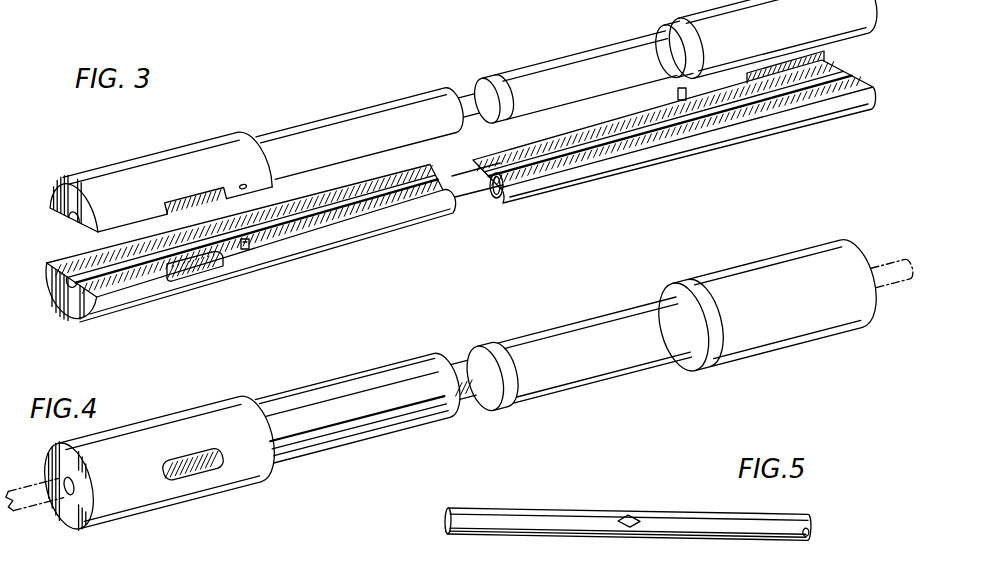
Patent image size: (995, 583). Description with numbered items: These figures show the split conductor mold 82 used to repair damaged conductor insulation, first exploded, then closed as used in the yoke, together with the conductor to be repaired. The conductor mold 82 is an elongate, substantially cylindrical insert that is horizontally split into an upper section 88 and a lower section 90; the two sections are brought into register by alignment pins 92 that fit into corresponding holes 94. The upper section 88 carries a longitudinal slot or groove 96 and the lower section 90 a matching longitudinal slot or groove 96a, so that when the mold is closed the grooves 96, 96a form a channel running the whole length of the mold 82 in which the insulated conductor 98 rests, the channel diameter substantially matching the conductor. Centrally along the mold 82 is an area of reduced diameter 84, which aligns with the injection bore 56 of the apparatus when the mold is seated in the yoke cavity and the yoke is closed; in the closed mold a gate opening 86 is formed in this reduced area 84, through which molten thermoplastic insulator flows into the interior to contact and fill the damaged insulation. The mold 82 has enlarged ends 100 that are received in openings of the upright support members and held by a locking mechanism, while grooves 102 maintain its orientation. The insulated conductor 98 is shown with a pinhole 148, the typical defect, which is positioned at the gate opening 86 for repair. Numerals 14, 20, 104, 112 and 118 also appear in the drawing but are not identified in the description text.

In FIG. 3, the member 14 is at (618, 6).
In FIG. 3, the member 20 is at (348, 7).
In FIG. 3, the injection bore 56 is at (434, 8).
In FIG. 3, the conductor mold 82 is at (335, 112).
In FIG. 4, the conductor mold 82 is at (390, 357).
In FIG. 3, the area of reduced diameter 84 is at (463, 98).
In FIG. 3, the gate opening 86 is at (520, 63).
In FIG. 4, the gate opening 86 is at (480, 406).
In FIG. 3, the upper section 88 is at (112, 183).
In FIG. 4, the upper section 88 is at (613, 299).
In FIG. 3, the lower section 90 is at (125, 324).
In FIG. 4, the lower section 90 is at (386, 449).
In FIG. 3, the alignment pins 92 is at (248, 248).
In FIG. 3, the holes 94 is at (243, 185).
In FIG. 3, the longitudinal slot or groove 96 is at (70, 222).
In FIG. 3, the longitudinal slot or groove 96a is at (72, 284).
In FIG. 4, the insulated conductor 98 is at (887, 285).
In FIG. 5, the insulated conductor 98 is at (700, 530).
In FIG. 4, the enlarged ends 100 is at (125, 505).
In FIG. 3, the grooves 102 is at (208, 204).
In FIG. 4, the grooves 102 is at (202, 473).
In FIG. 3, the member 104 is at (395, 18).
In FIG. 3, the member 112 is at (467, 5).
In FIG. 3, the member 118 is at (509, 9).
In FIG. 5, the pinhole 148 is at (640, 512).